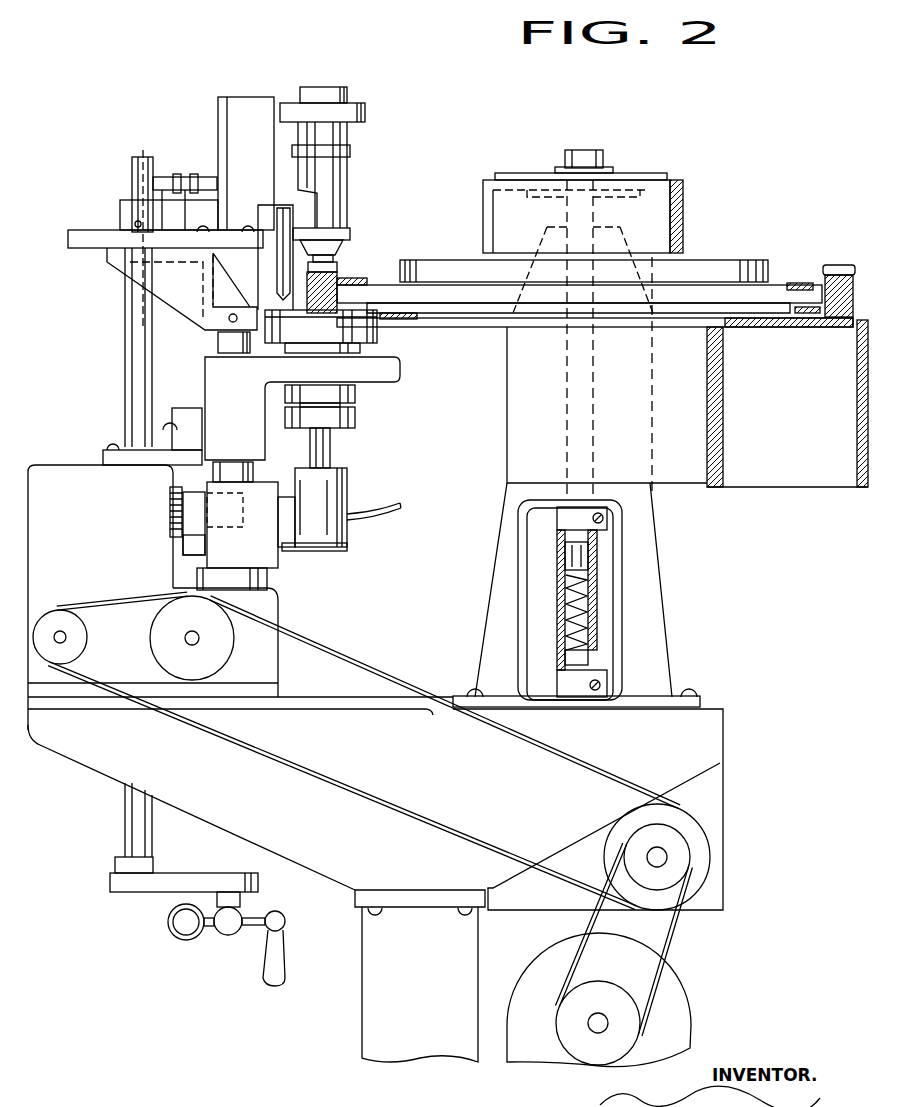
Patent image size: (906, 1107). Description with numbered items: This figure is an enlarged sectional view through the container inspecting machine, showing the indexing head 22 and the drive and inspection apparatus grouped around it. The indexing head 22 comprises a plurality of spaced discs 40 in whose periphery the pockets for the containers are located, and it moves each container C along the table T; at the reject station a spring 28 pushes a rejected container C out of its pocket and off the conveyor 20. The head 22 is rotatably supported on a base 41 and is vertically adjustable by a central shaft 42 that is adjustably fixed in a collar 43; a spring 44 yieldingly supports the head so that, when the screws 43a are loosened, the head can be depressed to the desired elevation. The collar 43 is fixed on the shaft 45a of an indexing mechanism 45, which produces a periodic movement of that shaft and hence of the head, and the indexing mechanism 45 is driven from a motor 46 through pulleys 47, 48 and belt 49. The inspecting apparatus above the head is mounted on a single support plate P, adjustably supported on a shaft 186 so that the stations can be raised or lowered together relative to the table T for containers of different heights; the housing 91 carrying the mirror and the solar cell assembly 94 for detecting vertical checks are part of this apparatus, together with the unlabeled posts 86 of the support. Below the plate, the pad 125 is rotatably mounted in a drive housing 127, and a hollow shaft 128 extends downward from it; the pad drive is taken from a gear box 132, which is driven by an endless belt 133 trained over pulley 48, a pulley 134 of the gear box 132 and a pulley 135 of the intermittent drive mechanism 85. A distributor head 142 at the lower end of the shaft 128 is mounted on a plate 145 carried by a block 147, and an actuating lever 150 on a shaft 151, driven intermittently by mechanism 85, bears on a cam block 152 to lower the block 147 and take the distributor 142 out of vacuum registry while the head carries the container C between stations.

The support plate P is at (76, 230).
The container C is at (340, 280).
The table T is at (493, 322).
The conveyor 20 is at (793, 500).
The indexing head 22 is at (712, 230).
The spring 28 is at (815, 328).
The spaced discs 40 is at (795, 305).
The base 41 is at (648, 608).
The central shaft 42 is at (568, 432).
The collar 43 is at (597, 560).
The screws 43a is at (607, 518).
The spring 44 is at (580, 603).
The indexing mechanism 45 is at (707, 727).
The shaft 45a is at (587, 656).
The motor 46 is at (672, 1023).
The pulley 47 is at (625, 1008).
The pulley 48 is at (678, 855).
The belt 49 is at (670, 933).
The intermittent drive mechanism 85 is at (58, 483).
The support posts 86 is at (140, 335).
The housing 91 is at (338, 188).
The solar cell assembly 94 is at (268, 279).
The pad 125 is at (378, 333).
The drive housing 127 is at (390, 373).
The hollow shaft 128 is at (320, 451).
The gear box 132 is at (268, 616).
The endless belt 133 is at (337, 661).
The pulley 134 is at (182, 612).
The pulley 135 is at (82, 583).
The distributor head 142 is at (338, 486).
The plate 145 is at (348, 549).
The block 147 is at (262, 556).
The actuating lever 150 is at (176, 528).
The shaft 151 is at (171, 507).
The cam block 152 is at (193, 542).
The shaft 186 is at (222, 343).